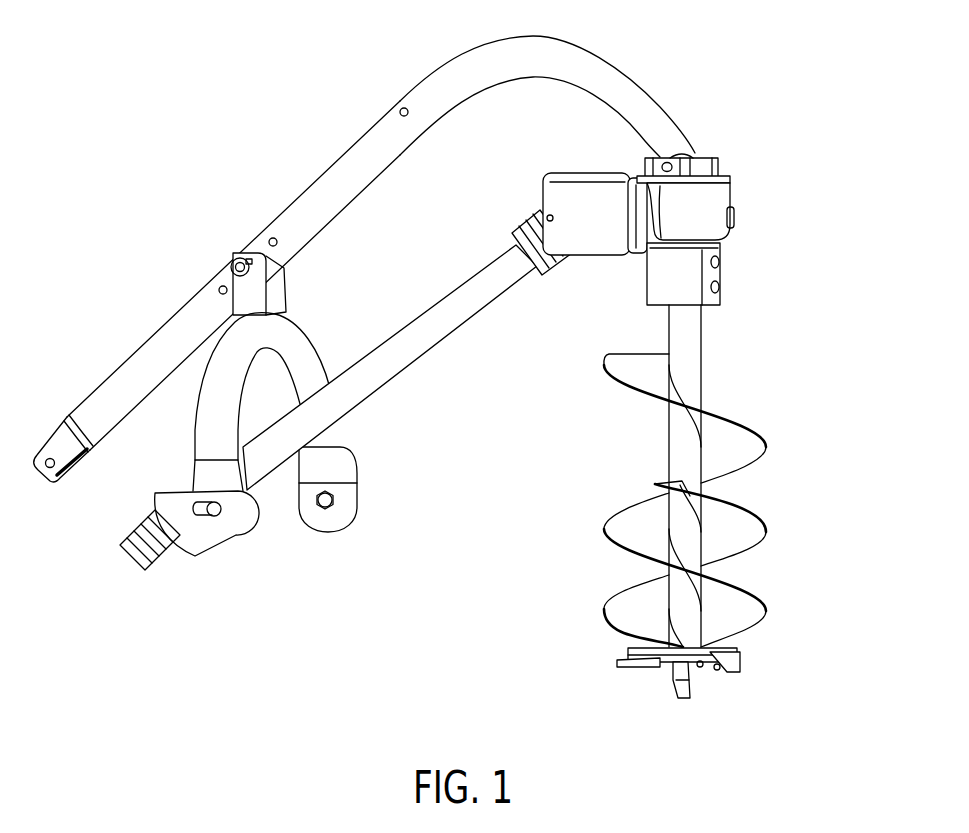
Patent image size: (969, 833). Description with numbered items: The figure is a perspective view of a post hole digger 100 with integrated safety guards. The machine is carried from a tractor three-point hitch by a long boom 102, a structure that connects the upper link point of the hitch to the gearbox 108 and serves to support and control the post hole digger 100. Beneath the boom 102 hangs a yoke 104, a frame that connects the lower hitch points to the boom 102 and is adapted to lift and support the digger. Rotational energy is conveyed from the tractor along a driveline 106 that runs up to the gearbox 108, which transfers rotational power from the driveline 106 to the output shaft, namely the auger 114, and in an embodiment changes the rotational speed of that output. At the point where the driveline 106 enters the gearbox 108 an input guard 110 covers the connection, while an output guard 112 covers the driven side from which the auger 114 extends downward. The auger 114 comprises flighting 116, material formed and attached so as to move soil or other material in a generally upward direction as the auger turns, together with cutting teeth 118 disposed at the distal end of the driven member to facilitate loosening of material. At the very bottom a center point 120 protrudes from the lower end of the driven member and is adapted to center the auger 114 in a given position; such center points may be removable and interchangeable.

The post hole digger 100 is at (303, 56).
The boom 102 is at (300, 215).
The yoke 104 is at (211, 404).
The driveline 106 is at (380, 363).
The gearbox 108 is at (717, 200).
The input guard 110 is at (587, 241).
The output guard 112 is at (694, 281).
The auger 114 is at (791, 418).
The flighting 116 is at (622, 524).
The cutting teeth 118 is at (630, 662).
The center point 120 is at (677, 680).